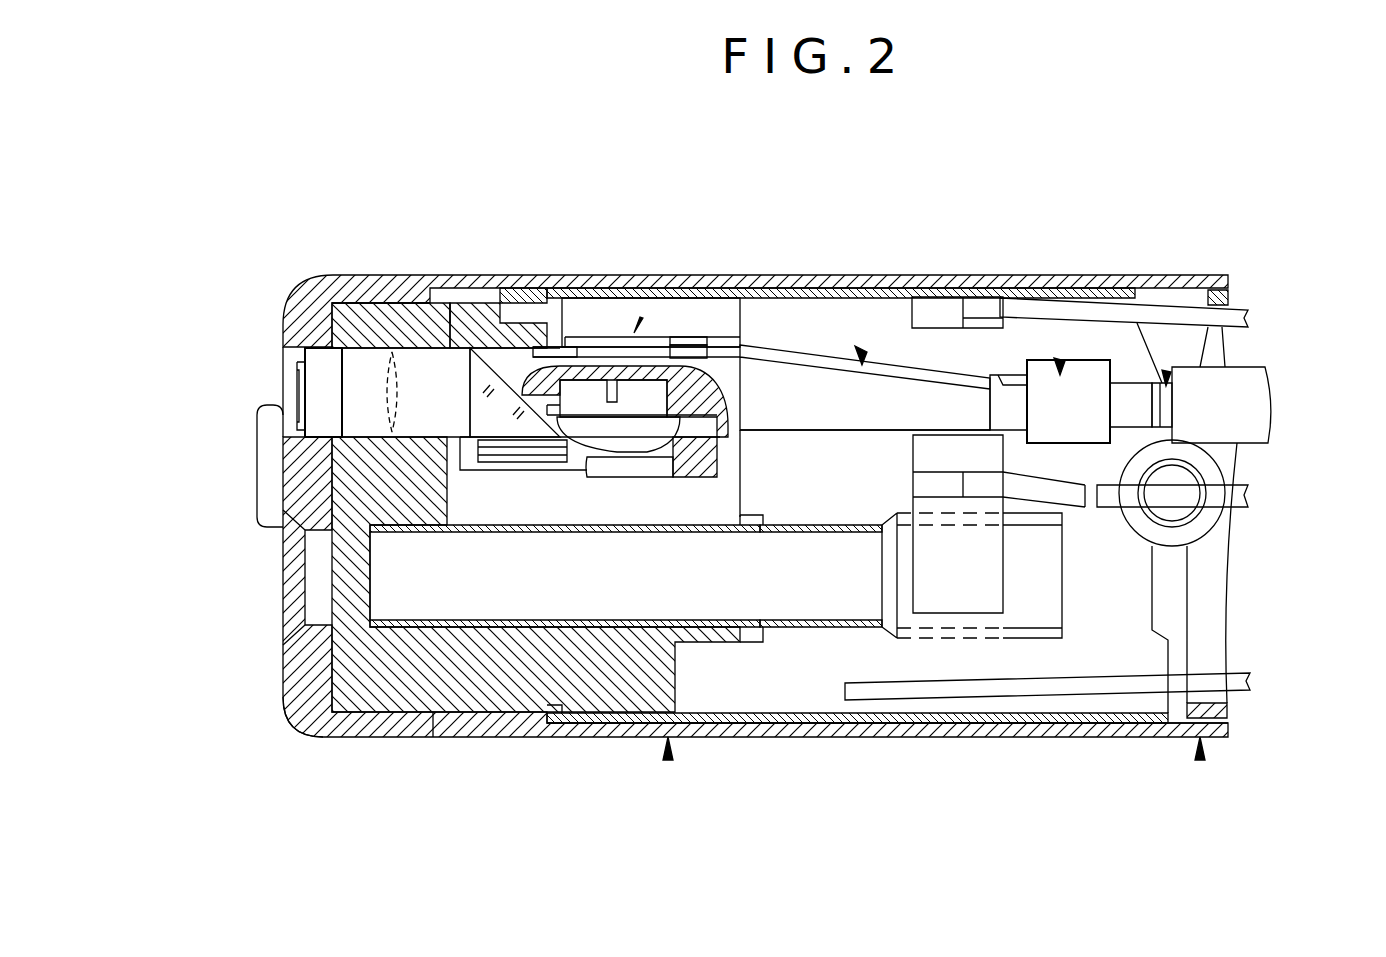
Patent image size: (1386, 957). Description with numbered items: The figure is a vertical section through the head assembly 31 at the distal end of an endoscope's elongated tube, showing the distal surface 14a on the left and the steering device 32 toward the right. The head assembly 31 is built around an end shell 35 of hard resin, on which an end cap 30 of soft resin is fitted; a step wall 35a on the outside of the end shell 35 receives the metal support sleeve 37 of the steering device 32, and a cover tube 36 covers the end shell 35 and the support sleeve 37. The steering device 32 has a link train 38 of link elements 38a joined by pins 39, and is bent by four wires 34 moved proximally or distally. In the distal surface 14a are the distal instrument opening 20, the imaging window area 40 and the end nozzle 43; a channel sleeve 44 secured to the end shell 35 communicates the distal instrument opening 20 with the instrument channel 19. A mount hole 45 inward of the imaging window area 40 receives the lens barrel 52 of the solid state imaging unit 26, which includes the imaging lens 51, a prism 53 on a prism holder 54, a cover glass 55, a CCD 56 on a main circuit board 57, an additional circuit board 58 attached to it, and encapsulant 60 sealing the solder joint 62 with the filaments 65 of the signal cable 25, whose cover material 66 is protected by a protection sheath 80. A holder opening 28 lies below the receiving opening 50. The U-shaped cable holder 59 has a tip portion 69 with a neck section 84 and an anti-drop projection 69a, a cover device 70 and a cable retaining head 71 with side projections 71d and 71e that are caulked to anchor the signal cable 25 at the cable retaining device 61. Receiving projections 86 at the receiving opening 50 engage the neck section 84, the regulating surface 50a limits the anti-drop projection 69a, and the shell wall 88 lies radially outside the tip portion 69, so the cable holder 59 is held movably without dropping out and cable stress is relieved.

The distal surface 14a is at (286, 657).
The instrument channel 19 is at (1060, 632).
The distal instrument opening 20 is at (300, 532).
The signal cable 25 is at (1168, 376).
The solid state imaging unit 26 is at (640, 318).
The holder opening 28 is at (732, 455).
The end cap 30 is at (294, 740).
The head assembly 31 is at (668, 760).
The steering device 32 is at (1200, 760).
The wires 34 is at (1250, 318).
The end shell 35 is at (385, 690).
The step wall 35a is at (552, 720).
The cover tube 36 is at (907, 723).
The support sleeve 37 is at (1002, 735).
The link train 38 is at (1318, 556).
The link elements 38a is at (1200, 602).
The pins 39 is at (1178, 503).
The imaging window area 40 is at (300, 352).
The end nozzle 43 is at (270, 418).
The channel sleeve 44 is at (780, 532).
The mount hole 45 is at (356, 345).
The receiving opening 50 is at (605, 340).
The regulating surface 50a is at (548, 292).
The imaging lens 51 is at (388, 360).
The lens barrel 52 is at (422, 360).
The prism 53 is at (435, 345).
The prism holder 54 is at (472, 532).
The cover glass 55 is at (560, 462).
The CCD 56 is at (498, 450).
The main circuit board 57 is at (600, 420).
The additional circuit board 58 is at (637, 408).
The cable holder 59 is at (862, 350).
The encapsulant 60 is at (675, 470).
The cable retaining device 61 is at (1060, 360).
The solder joint 62 is at (725, 447).
The filaments 65 is at (732, 365).
The cover material 66 is at (1160, 428).
The tip portion 69 is at (588, 342).
The anti-drop projection 69a is at (540, 352).
The cover device 70 is at (795, 345).
The cable retaining head 71 is at (993, 372).
The first pair of side projections 71d is at (1010, 378).
The second pair of side projections 71e is at (1130, 390).
The protection sheath 80 is at (1270, 407).
The neck section 84 is at (683, 335).
The receiving projections 86 is at (700, 345).
The shell wall 88 is at (508, 298).